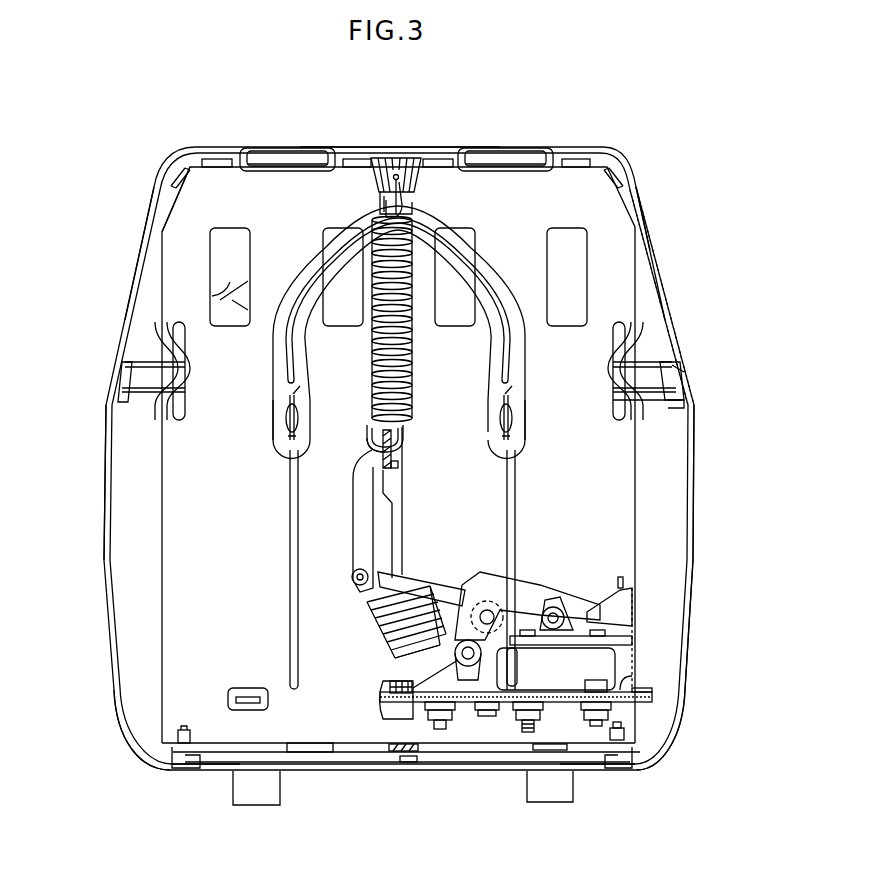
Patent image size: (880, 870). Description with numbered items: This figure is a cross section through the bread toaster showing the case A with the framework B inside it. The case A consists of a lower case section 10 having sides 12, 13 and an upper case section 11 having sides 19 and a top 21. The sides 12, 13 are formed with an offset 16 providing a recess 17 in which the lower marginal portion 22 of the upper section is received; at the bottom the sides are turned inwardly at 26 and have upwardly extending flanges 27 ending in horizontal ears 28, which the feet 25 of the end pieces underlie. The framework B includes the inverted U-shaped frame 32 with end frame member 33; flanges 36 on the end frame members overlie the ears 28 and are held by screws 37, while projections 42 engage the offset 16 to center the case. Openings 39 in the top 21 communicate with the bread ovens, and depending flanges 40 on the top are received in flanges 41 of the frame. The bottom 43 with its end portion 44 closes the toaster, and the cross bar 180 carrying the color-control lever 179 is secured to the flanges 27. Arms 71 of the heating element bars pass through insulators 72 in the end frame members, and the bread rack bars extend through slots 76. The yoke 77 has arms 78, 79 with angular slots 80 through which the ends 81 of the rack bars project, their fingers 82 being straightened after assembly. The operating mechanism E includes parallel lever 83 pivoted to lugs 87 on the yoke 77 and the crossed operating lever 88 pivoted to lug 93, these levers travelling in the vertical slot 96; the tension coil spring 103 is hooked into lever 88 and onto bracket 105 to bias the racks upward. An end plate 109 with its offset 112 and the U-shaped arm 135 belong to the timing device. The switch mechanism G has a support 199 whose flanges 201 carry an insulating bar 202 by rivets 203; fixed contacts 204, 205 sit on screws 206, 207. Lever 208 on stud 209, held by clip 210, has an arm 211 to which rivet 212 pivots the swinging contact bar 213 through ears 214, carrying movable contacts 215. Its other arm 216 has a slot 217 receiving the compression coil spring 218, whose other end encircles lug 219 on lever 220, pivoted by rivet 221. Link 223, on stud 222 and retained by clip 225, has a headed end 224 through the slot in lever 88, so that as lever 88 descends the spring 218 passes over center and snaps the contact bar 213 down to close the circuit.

The lower case section 10 is at (690, 590).
The upper case section 11 is at (666, 278).
The side 12 is at (690, 545).
The side 13 is at (104, 590).
The offset 16 is at (674, 368).
The recess 17 is at (672, 404).
The sides 19 is at (134, 262).
The top 21 is at (432, 149).
The lower marginal portion 22 is at (684, 378).
The feet 25 is at (256, 792).
The inwardly turned portion 26 is at (141, 762).
The flange 27 is at (167, 754).
The ears 28 is at (192, 756).
The frame 32 is at (599, 178).
The end frame member 33 is at (607, 510).
The flange 36 is at (253, 743).
The screws 37 is at (175, 766).
The openings 39 is at (301, 149).
The depending flanges 40 is at (275, 150).
The flanges 41 is at (272, 168).
The projections 42 is at (155, 355).
The bottom 43 is at (345, 771).
The end portion 44 is at (450, 771).
The arms 71 is at (256, 698).
The insulators 72 is at (243, 697).
The slots 76 is at (290, 530).
The yoke 77 is at (490, 292).
The arm 78 is at (273, 381).
The arm 79 is at (527, 379).
The slots 80 is at (298, 396).
The ends 81 is at (287, 442).
The fingers 82 is at (287, 402).
The parallel lever 83 is at (403, 202).
The lugs 87 is at (384, 203).
The operating lever 88 is at (392, 436).
The lug 93 is at (418, 568).
The vertical slot 96 is at (402, 458).
The tension coil spring 103 is at (413, 362).
The bracket 105 is at (416, 185).
The end plate 109 is at (230, 312).
The offset 112 is at (222, 288).
The U-shaped arm 135 is at (240, 286).
The lever 179 is at (386, 753).
The cross bar 180 is at (269, 751).
The support 199 is at (605, 605).
The flanges 201 is at (475, 712).
The bar 202 is at (630, 686).
The rivets 203 is at (637, 694).
The fixed contact 204 is at (537, 684).
The fixed contact 205 is at (595, 681).
The screw 206 is at (526, 733).
The screw 207 is at (598, 727).
The lever 208 is at (516, 585).
The stud 209 is at (486, 610).
The clip 210 is at (455, 656).
The arm 211 is at (558, 604).
The rivet 212 is at (567, 610).
The swinging contact bar 213 is at (600, 640).
The ears 214 is at (542, 606).
The movable contacts 215 is at (603, 642).
The arm 216 is at (420, 658).
The slot 217 is at (388, 630).
The compression coil spring 218 is at (428, 612).
The lug 219 is at (368, 603).
The lever 220 is at (360, 568).
The rivet 221 is at (490, 605).
The stud 222 is at (352, 579).
The link 223 is at (354, 512).
The headed end 224 is at (397, 466).
The clip 225 is at (405, 556).
The case A is at (655, 200).
The framework B is at (160, 200).
The operating mechanism E is at (368, 448).
The switch mechanism G is at (392, 712).